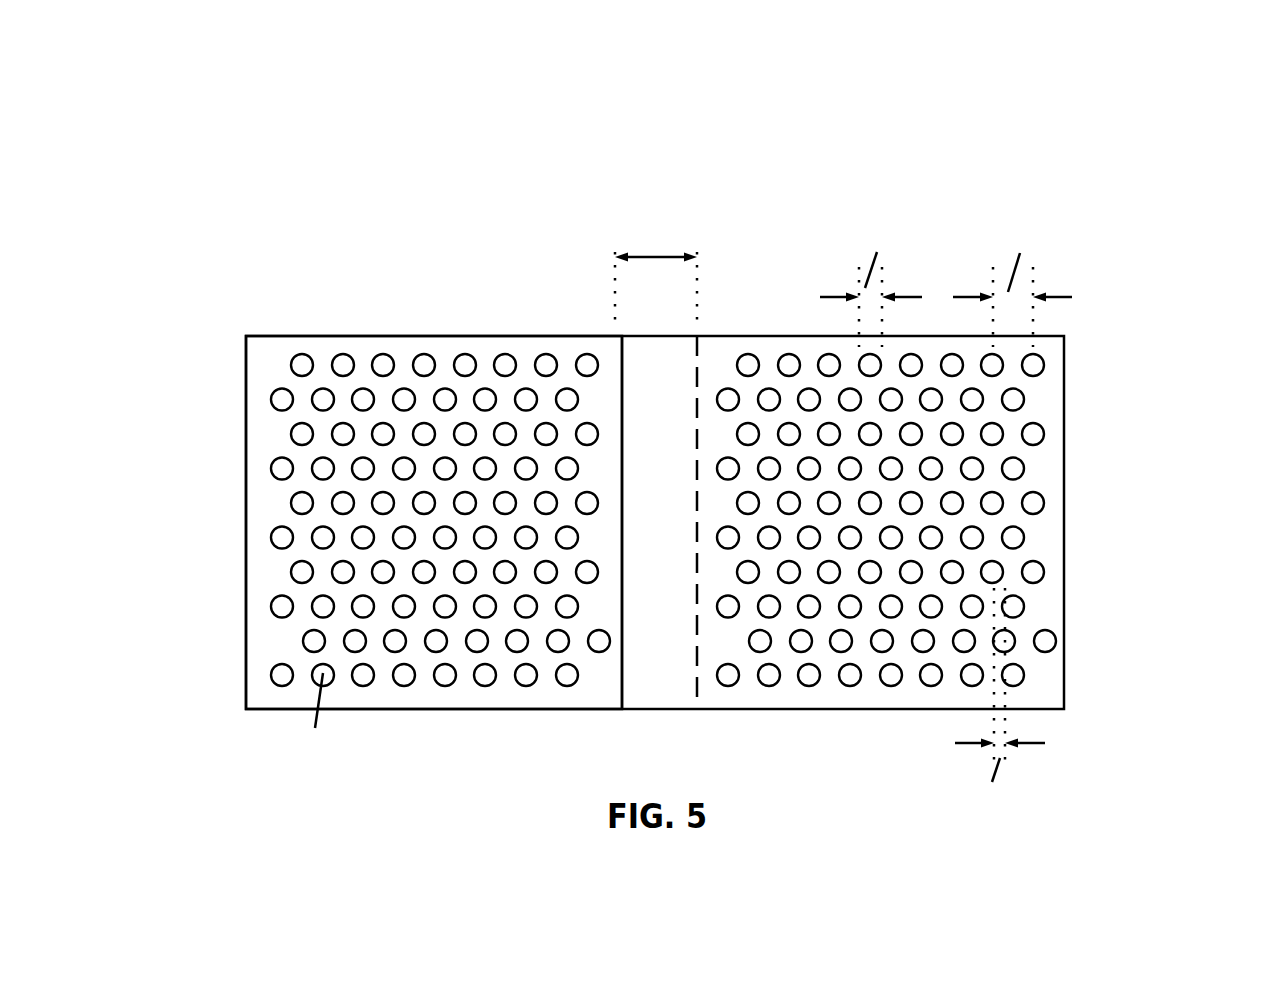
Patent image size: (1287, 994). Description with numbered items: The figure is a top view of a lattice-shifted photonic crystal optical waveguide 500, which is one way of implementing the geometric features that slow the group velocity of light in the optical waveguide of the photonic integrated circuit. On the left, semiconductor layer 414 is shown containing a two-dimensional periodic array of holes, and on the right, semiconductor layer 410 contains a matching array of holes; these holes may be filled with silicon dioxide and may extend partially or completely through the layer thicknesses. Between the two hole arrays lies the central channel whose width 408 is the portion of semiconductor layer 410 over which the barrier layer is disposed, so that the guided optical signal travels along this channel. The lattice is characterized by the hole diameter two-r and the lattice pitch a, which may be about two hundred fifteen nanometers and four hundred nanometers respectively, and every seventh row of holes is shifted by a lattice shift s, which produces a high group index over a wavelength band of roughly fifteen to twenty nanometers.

The lattice-shifted photonic crystal optical waveguide 500 is at (382, 133).
The width 408 is at (655, 255).
The semiconductor layer 414 is at (362, 350).
The semiconductor layer 410 is at (1057, 450).